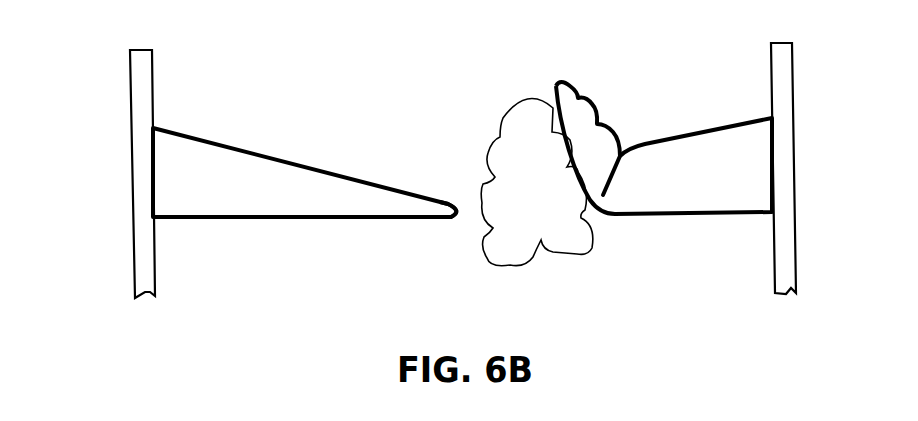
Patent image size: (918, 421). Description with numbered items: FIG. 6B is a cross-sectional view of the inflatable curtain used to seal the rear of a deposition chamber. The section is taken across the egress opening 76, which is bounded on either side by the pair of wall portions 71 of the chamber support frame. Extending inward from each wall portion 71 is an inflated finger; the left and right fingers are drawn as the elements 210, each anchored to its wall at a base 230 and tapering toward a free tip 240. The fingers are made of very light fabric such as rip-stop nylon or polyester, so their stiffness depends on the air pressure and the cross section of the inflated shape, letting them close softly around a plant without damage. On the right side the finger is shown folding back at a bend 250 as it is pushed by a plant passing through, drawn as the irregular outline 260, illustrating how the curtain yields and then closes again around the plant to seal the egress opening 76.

The wall portion 71 is at (140, 100).
The plate 210 is at (298, 220).
The base portion 230 is at (157, 173).
The tip 240 is at (455, 200).
The bend 250 is at (629, 130).
The fragment cloud 260 is at (515, 100).
The egress opening 76 is at (376, 66).